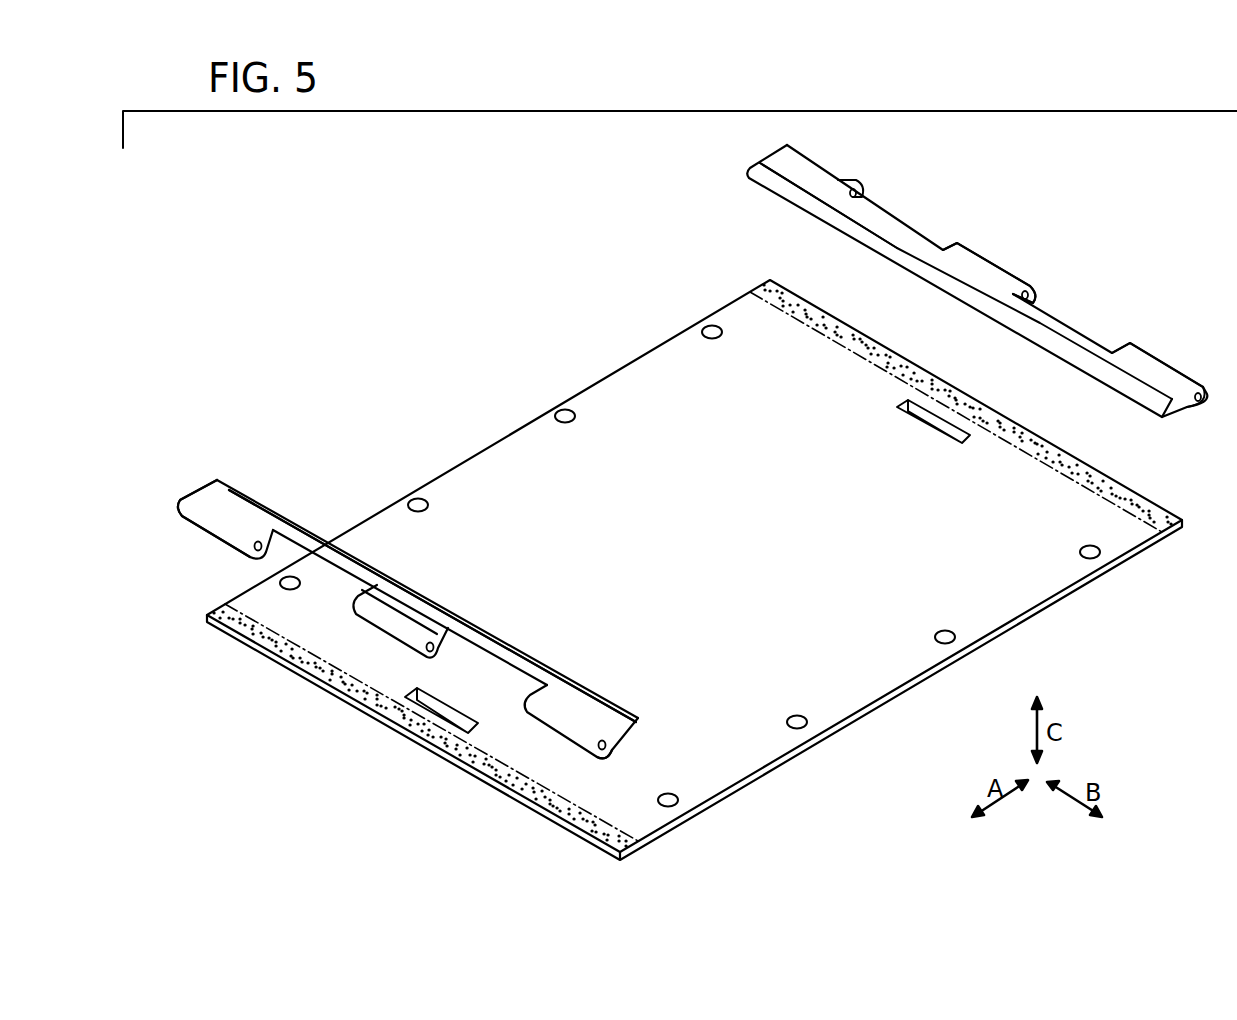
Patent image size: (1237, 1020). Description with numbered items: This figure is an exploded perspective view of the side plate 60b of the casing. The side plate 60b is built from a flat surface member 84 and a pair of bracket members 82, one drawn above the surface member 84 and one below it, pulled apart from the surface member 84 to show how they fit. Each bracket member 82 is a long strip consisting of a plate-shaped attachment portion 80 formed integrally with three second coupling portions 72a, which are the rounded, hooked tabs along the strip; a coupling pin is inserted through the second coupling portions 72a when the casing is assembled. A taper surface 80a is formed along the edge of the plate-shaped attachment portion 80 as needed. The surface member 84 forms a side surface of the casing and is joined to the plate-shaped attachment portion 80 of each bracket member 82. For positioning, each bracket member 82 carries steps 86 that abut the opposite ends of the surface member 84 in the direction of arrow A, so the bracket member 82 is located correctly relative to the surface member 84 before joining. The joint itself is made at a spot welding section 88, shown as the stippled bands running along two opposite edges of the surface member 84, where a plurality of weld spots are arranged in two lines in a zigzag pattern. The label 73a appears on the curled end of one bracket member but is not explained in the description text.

The side plate 60b is at (365, 344).
The surface member 84 is at (490, 472).
The spot welding section 88 is at (350, 686).
The plate-shaped attachment portion 80 is at (1045, 312).
The taper surface 80a is at (897, 249).
The second coupling portion 72a is at (988, 272).
The step 86 is at (1183, 409).
The curled portion 73a is at (608, 756).
The bracket member 82 is at (185, 473).